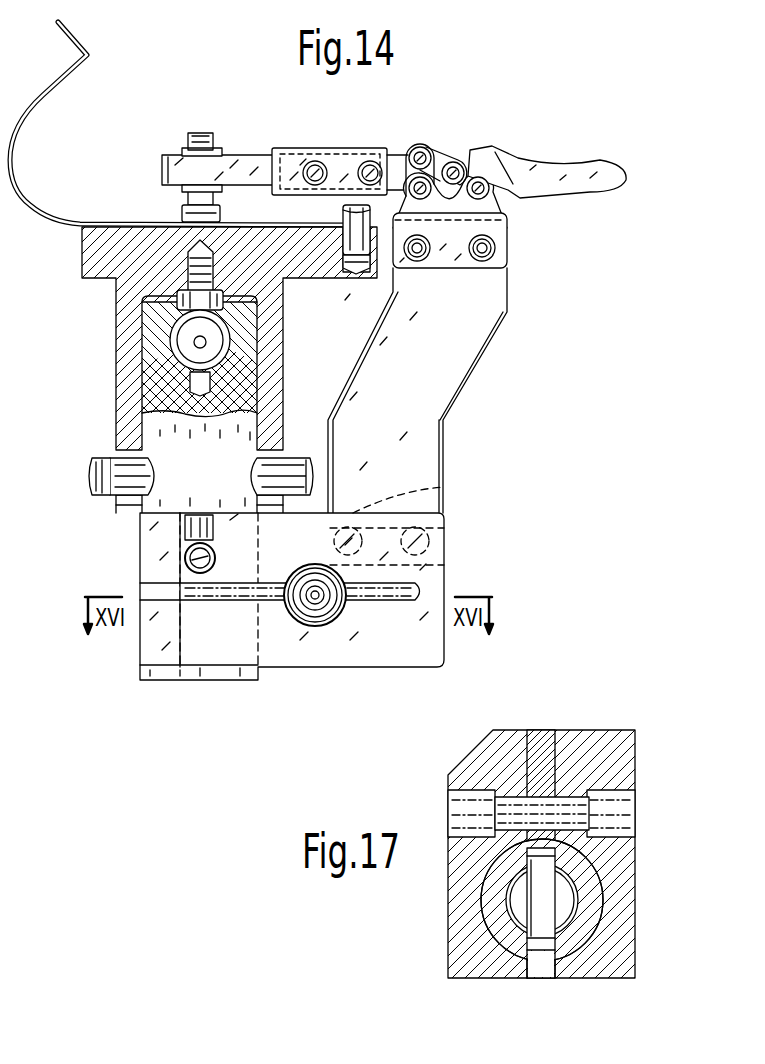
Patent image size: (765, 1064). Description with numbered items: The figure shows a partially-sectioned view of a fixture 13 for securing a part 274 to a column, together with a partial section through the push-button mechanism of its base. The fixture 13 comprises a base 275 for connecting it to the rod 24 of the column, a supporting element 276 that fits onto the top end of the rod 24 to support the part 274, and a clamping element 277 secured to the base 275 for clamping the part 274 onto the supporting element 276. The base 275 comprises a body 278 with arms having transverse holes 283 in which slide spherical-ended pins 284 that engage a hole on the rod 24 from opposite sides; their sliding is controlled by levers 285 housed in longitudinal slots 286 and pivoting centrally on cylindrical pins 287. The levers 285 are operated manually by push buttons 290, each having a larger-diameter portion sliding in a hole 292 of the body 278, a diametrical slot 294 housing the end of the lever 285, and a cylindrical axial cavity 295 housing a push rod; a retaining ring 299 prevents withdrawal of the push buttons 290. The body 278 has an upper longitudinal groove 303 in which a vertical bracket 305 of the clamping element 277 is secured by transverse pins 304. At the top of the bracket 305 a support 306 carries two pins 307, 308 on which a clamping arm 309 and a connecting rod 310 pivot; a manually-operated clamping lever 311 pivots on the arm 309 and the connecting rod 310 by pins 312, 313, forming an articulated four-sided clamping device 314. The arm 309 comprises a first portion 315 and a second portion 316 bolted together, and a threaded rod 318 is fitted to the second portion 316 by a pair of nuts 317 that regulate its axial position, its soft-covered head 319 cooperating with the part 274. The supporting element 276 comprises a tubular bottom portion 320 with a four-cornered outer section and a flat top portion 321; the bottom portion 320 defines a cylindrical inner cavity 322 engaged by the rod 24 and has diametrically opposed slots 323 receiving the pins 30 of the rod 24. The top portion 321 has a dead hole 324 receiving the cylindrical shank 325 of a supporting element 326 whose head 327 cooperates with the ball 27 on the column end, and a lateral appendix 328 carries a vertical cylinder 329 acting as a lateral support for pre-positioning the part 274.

In FIG. 14, the fixture 13 is at (500, 80).
In FIG. 14, the rod 24 is at (173, 672).
In FIG. 14, the ball 27 is at (213, 341).
In FIG. 14, the pins 30 is at (203, 463).
In FIG. 14, the part 274 is at (30, 194).
In FIG. 14, the base 275 is at (308, 599).
In FIG. 14, the supporting element 276 is at (174, 404).
In FIG. 14, the clamping element 277 is at (453, 390).
In FIG. 14, the body 278 is at (408, 645).
In FIG. 14, the transverse holes 283 is at (185, 558).
In FIG. 14, the spherical-ended pins 284 is at (183, 553).
In FIG. 14, the levers 285 is at (185, 593).
In FIG. 17, the levers 285 is at (527, 758).
In FIG. 14, the longitudinal slots 286 is at (232, 594).
In FIG. 17, the longitudinal slots 286 is at (529, 760).
In FIG. 17, the cylindrical pins 287 is at (512, 827).
In FIG. 14, the push buttons 290 is at (331, 640).
In FIG. 17, the hole 292 is at (504, 908).
In FIG. 17, the diametrical slot 294 is at (552, 849).
In FIG. 17, the cylindrical axial cavity 295 is at (572, 884).
In FIG. 14, the retaining ring 299 is at (318, 622).
In FIG. 14, the upper longitudinal groove 303 is at (444, 490).
In FIG. 14, the transverse pins 304 is at (448, 528).
In FIG. 14, the vertical bracket 305 is at (418, 410).
In FIG. 14, the support 306 is at (455, 228).
In FIG. 14, the pin 307 is at (448, 165).
In FIG. 14, the pin 308 is at (495, 198).
In FIG. 14, the clamping arm 309 is at (341, 137).
In FIG. 14, the connecting rod 310 is at (490, 168).
In FIG. 14, the clamping lever 311 is at (528, 163).
In FIG. 14, the pin 312 is at (420, 146).
In FIG. 14, the pin 313 is at (456, 160).
In FIG. 14, the articulated four-sided clamping device 314 is at (338, 145).
In FIG. 14, the first portion 315 is at (395, 177).
In FIG. 14, the second portion 316 is at (250, 170).
In FIG. 14, the nuts 317 is at (185, 152).
In FIG. 14, the threaded rod 318 is at (185, 197).
In FIG. 14, the head 319 is at (182, 216).
In FIG. 14, the tubular bottom portion 320 is at (128, 410).
In FIG. 14, the flat top portion 321 is at (125, 250).
In FIG. 14, the cylindrical inner cavity 322 is at (186, 401).
In FIG. 14, the slots 323 is at (128, 457).
In FIG. 14, the dead hole 324 is at (215, 262).
In FIG. 14, the cylindrical shank 325 is at (193, 270).
In FIG. 14, the supporting element 326 is at (173, 313).
In FIG. 14, the head 327 is at (187, 353).
In FIG. 14, the lateral appendix 328 is at (333, 258).
In FIG. 14, the vertical cylinder 329 is at (355, 265).